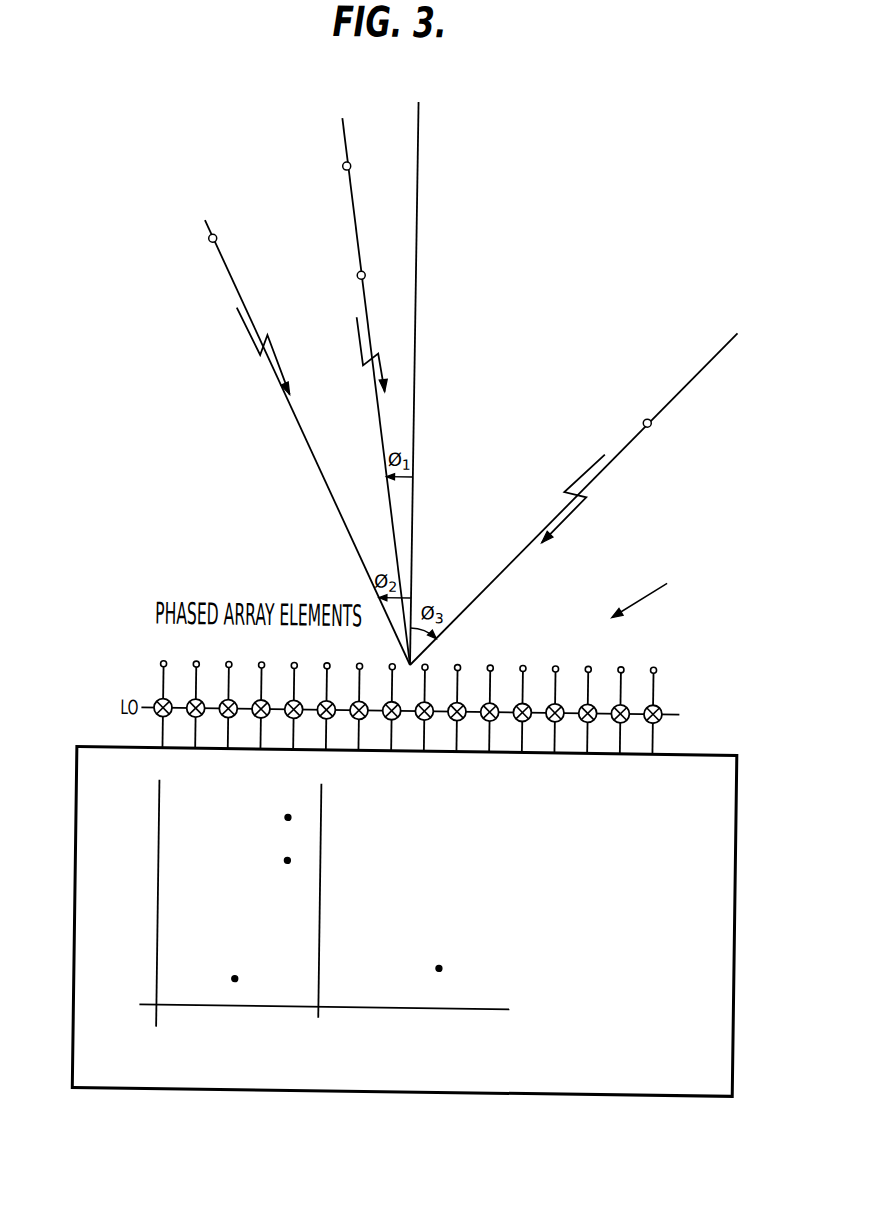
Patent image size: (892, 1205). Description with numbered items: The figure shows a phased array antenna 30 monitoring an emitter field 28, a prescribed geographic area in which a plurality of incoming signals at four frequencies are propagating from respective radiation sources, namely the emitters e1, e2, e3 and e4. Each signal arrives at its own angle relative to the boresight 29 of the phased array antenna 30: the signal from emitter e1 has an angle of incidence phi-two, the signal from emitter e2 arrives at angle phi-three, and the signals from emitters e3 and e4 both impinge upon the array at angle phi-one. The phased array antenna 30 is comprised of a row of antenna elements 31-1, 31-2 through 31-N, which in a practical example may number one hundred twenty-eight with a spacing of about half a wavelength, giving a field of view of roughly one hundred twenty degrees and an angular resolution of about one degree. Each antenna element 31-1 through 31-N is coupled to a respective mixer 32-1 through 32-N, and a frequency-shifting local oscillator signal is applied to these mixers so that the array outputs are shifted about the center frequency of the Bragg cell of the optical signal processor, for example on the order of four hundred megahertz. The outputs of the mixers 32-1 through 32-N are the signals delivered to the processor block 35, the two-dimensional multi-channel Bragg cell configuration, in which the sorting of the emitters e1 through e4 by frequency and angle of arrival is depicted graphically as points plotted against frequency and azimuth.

The emitter field 28 is at (529, 176).
The boresight 29 is at (411, 134).
The phased array antenna 30 is at (657, 594).
The antenna element 31-1 is at (163, 681).
The antenna element 31-2 is at (197, 682).
The antenna element 31-N is at (656, 684).
The mixer 32-1 is at (155, 717).
The mixer 32-N is at (683, 730).
The processor block 35 is at (739, 914).
The emitter e1 is at (212, 242).
The emitter e2 is at (649, 423).
The emitter e3 is at (360, 274).
The emitter e4 is at (344, 170).